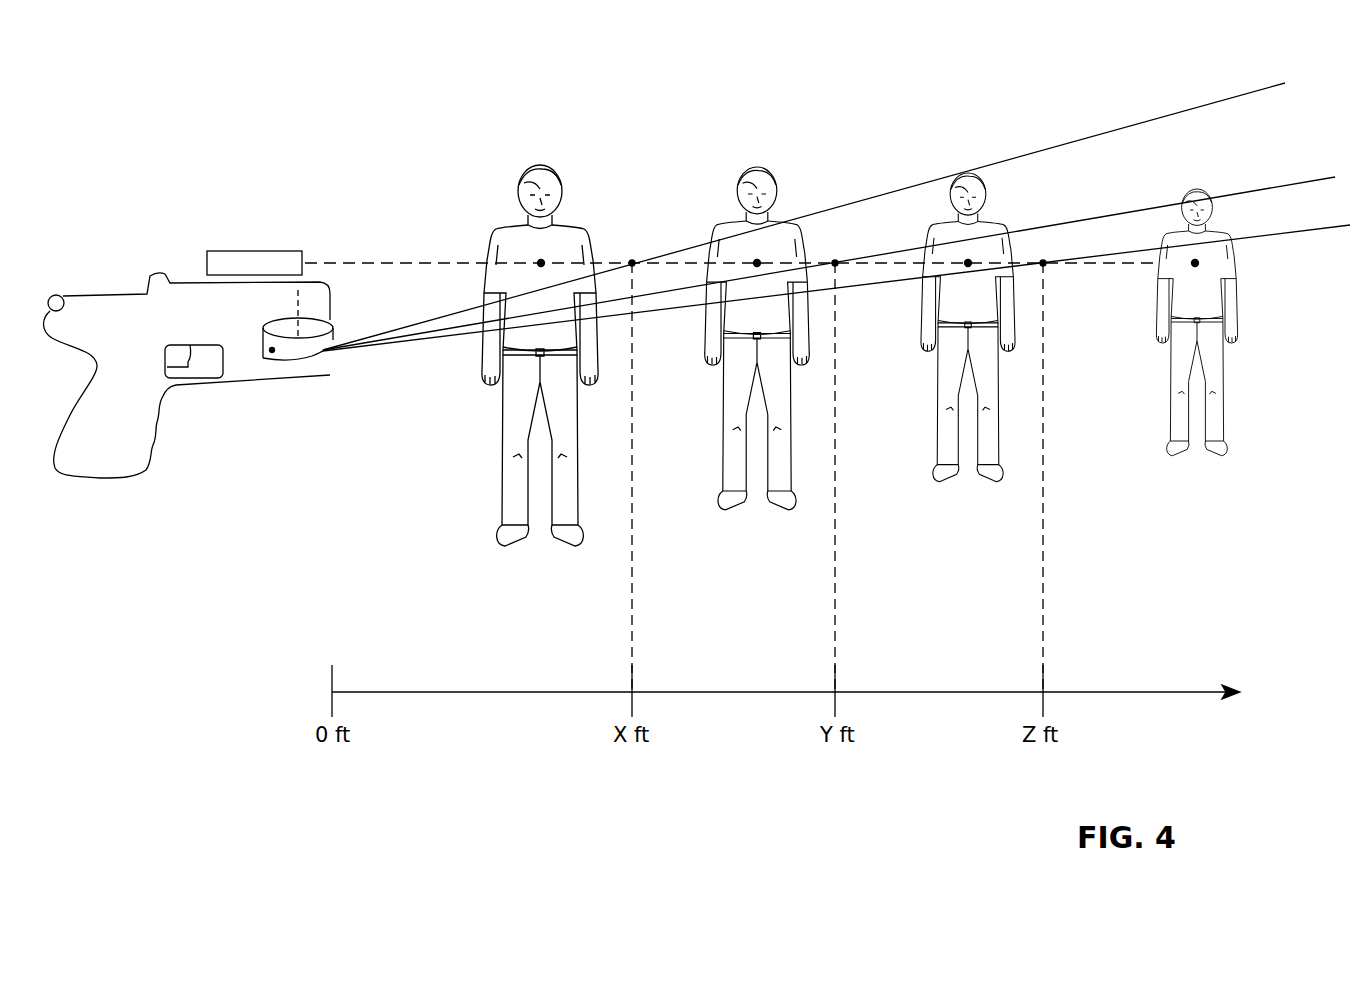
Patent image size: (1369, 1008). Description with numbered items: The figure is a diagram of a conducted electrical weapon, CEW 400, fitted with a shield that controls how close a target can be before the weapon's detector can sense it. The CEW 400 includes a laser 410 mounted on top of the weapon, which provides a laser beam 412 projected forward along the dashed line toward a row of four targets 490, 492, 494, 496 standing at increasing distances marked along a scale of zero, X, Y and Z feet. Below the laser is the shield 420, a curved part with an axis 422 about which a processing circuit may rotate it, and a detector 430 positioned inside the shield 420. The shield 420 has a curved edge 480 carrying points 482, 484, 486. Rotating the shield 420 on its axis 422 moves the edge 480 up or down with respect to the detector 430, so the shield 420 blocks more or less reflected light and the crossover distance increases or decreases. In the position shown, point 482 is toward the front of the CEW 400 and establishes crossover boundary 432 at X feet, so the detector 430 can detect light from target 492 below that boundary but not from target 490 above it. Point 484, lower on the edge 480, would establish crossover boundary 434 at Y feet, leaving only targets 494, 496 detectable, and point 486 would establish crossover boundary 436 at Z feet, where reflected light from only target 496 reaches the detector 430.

The CEW 400 is at (178, 128).
The laser 410 is at (222, 251).
The laser beam 412 is at (362, 262).
The shield 420 is at (262, 338).
The axis 422 is at (295, 303).
The detector 430 is at (272, 352).
The crossover boundary 432 is at (880, 188).
The crossover boundary 434 is at (1118, 207).
The crossover boundary 436 is at (1307, 228).
The edge 480 is at (280, 360).
The point 482 is at (327, 345).
The point 484 is at (326, 351).
The point 486 is at (325, 353).
The target 490 is at (531, 166).
The target 492 is at (750, 168).
The target 494 is at (962, 174).
The target 496 is at (1194, 188).